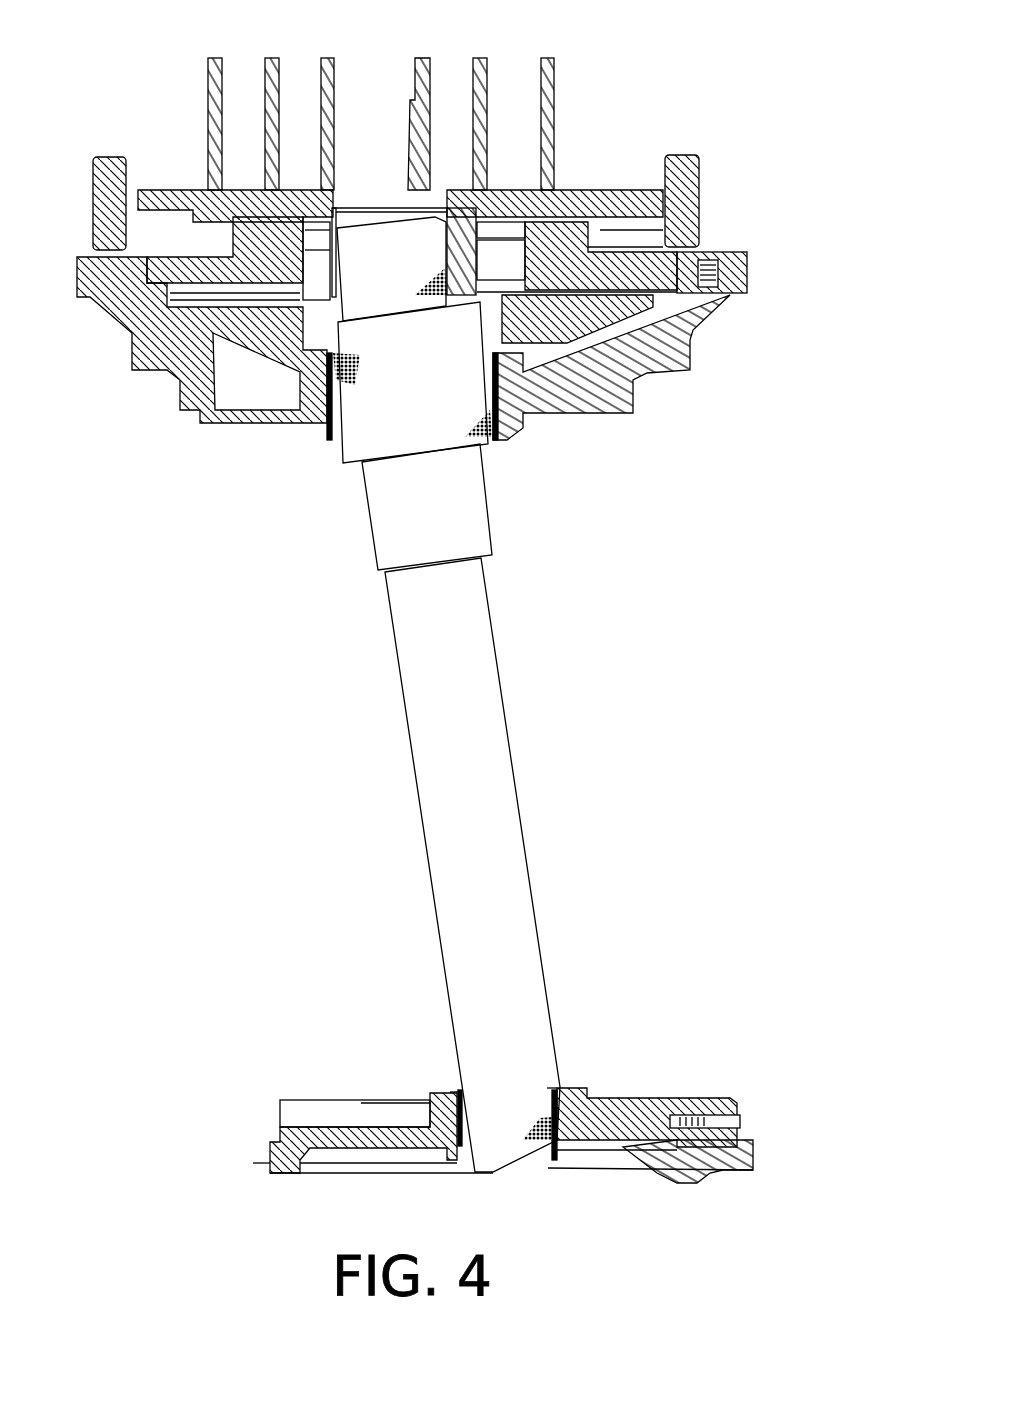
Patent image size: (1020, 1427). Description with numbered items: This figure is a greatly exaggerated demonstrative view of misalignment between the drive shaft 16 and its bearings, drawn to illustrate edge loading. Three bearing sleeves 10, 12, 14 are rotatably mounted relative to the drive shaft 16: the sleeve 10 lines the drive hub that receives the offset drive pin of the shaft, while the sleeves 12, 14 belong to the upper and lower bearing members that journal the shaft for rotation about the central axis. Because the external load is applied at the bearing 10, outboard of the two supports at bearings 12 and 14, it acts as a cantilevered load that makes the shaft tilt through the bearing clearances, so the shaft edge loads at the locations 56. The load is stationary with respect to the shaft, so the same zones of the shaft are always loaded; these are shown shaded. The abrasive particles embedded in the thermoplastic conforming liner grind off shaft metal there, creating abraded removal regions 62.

The bearing sleeve 10 is at (446, 265).
The bearing sleeve 12 is at (500, 392).
The bearing sleeve 14 is at (590, 1092).
The drive shaft 16 is at (482, 655).
The locations of edge loading 56 is at (307, 187).
The abraded removal regions 62 is at (423, 280).